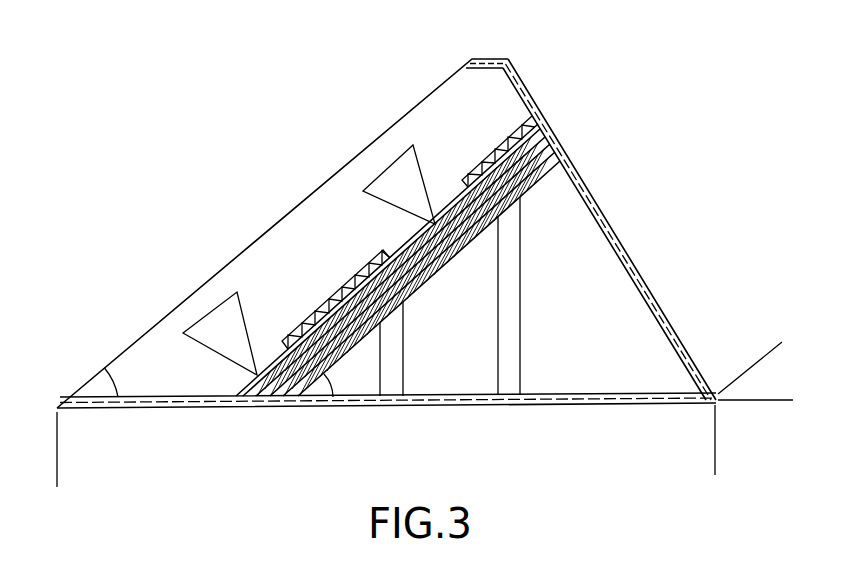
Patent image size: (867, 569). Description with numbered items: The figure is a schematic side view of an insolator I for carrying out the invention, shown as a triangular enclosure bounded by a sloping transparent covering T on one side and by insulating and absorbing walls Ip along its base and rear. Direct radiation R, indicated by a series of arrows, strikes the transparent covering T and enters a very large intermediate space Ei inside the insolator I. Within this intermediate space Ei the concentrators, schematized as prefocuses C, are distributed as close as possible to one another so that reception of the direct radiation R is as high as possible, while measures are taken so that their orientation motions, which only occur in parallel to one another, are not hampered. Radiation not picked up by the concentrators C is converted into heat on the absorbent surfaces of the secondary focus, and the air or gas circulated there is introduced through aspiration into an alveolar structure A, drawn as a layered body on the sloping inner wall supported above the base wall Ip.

The transparent covering T is at (456, 70).
The direct radiation R is at (130, 338).
The concentrator (prefocus) C is at (240, 306).
The intermediate space Ei is at (420, 256).
The alveolar structure A is at (317, 300).
The insolator I is at (559, 141).
The insulating and absorbing walls Ip is at (652, 291).